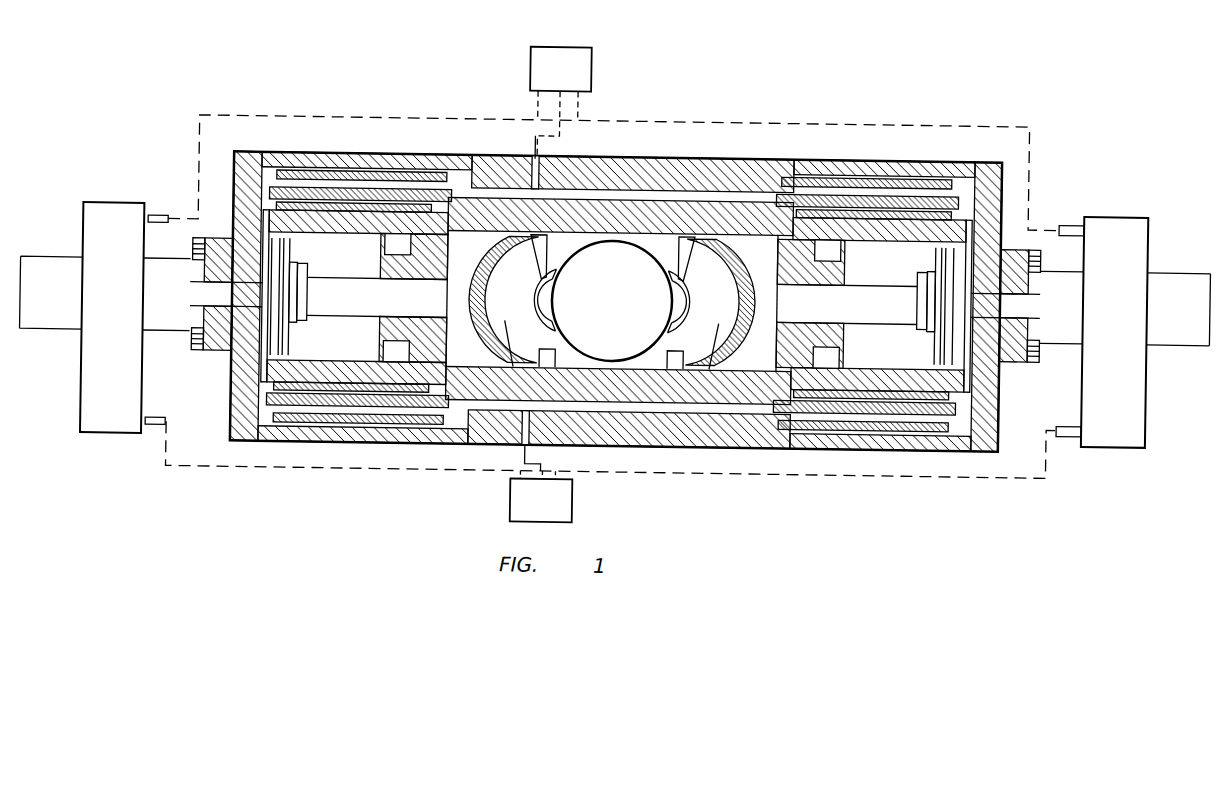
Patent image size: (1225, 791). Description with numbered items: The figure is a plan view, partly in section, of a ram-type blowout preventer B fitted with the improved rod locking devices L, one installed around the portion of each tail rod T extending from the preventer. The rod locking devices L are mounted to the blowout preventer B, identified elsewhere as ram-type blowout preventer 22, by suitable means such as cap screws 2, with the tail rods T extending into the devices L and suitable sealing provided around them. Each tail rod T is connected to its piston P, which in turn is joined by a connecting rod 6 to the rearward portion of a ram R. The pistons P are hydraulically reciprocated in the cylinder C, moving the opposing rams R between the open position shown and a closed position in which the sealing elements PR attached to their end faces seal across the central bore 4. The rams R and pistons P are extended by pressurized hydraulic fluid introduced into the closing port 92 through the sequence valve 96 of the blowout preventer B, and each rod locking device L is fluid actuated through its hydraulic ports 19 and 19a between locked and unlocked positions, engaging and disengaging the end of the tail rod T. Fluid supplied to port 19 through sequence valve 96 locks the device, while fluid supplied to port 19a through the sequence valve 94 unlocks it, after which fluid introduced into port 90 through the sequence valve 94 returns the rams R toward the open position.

The sequence valve 96 is at (588, 72).
The sequence valve 94 is at (575, 500).
The closing port 92 is at (530, 157).
The port 90 is at (532, 450).
The ram-type blowout preventer B is at (610, 158).
The sealing elements PR is at (660, 262).
The central bore 4 is at (558, 300).
The ram R is at (712, 345).
The connecting rod 6 is at (407, 309).
The cylinder C is at (343, 355).
The piston P is at (270, 360).
The cap screws 2 is at (200, 338).
The tail rod T is at (222, 350).
The ram-type blowout preventer 22 is at (990, 388).
The rod locking device L is at (80, 400).
The hydraulic port 19 is at (165, 214).
The hydraulic port 19a is at (152, 427).